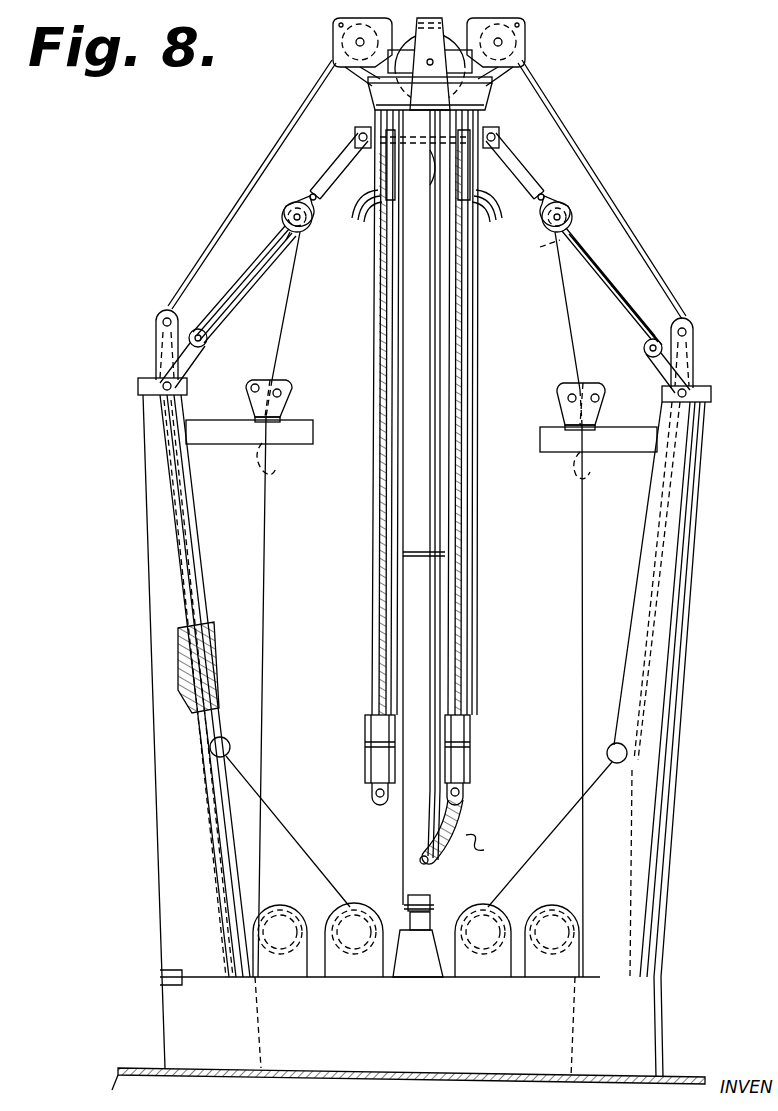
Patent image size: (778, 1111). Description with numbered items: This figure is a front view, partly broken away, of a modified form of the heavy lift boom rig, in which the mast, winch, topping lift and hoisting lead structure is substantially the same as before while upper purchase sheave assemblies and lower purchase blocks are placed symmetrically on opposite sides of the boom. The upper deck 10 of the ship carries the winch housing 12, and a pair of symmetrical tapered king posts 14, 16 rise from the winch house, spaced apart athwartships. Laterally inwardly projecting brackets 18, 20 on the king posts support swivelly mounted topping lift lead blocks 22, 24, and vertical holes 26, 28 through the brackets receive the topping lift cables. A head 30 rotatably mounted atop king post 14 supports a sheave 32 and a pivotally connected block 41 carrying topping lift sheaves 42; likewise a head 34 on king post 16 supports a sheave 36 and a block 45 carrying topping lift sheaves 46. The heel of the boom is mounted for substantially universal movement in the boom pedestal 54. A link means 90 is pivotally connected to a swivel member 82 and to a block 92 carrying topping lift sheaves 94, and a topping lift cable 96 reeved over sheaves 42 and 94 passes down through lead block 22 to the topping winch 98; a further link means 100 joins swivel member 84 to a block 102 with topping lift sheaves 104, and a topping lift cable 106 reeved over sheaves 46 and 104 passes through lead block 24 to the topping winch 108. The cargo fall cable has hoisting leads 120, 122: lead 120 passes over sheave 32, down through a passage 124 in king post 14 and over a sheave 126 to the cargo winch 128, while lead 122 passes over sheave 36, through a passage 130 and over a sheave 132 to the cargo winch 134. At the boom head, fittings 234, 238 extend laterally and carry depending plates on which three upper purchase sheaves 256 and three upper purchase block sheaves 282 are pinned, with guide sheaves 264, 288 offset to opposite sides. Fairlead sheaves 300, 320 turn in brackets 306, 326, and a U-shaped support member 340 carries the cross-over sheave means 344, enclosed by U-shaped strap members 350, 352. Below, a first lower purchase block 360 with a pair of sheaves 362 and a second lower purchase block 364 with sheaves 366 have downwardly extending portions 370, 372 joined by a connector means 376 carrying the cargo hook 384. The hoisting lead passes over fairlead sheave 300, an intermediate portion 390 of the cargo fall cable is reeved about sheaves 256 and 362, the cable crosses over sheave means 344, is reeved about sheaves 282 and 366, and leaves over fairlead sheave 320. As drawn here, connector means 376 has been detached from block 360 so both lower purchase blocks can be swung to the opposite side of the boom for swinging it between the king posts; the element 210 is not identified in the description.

The upper deck of a ship 10 is at (134, 1070).
The winch housing 12 is at (424, 1040).
The king post 14 is at (165, 905).
The king post 16 is at (676, 824).
The bracket 18 is at (222, 440).
The bracket 20 is at (612, 446).
The topping lift lead block 22 is at (290, 380).
The topping lift lead block 24 is at (562, 386).
The vertical hole 26 is at (278, 455).
The vertical hole 28 is at (566, 460).
The head 30 is at (152, 360).
The sheave 32 is at (158, 306).
The head 34 is at (700, 348).
The sheave 36 is at (696, 320).
The block 41 is at (192, 350).
The topping lift sheaves 42 is at (222, 330).
The block 45 is at (660, 366).
The topping lift sheaves 46 is at (632, 344).
The boom pedestal 54 is at (428, 970).
The swivel member 82 is at (352, 136).
The swivel member 84 is at (500, 134).
The link means 90 is at (328, 186).
The block 92 is at (288, 212).
The topping lift sheaves 94 is at (278, 258).
The topping lift cable 96 is at (284, 330).
The topping winch 98 is at (286, 968).
The link means 100 is at (522, 172).
The block 102 is at (570, 196).
The topping lift sheaves 104 is at (530, 245).
The topping lift cable 106 is at (568, 318).
The topping winch 108 is at (548, 968).
The hoisting lead 120 is at (225, 233).
The hoisting lead 122 is at (630, 218).
The passage 124 is at (205, 650).
The sheave 126 is at (235, 742).
The hoisting or cargo winch 128 is at (364, 968).
The passage 130 is at (650, 665).
The sheave 132 is at (608, 752).
The hoisting or cargo winch 134 is at (486, 968).
The central rod 210 is at (402, 838).
The fitting 234 is at (370, 108).
The fitting 238 is at (486, 94).
The upper purchase sheaves 256 is at (356, 211).
The guide sheave 264 is at (428, 168).
The upper purchase block sheaves 282 is at (497, 214).
The guide sheave 288 is at (456, 124).
The fairlead sheave 300 is at (345, 46).
The bracket 306 is at (326, 26).
The fairlead sheave 320 is at (520, 48).
The bracket 326 is at (536, 26).
The support member 340 is at (430, 64).
The cross-over sheave means 344 is at (356, 78).
The U-shaped strap member 350 is at (372, 88).
The U-shaped strap member 352 is at (494, 86).
The first lower purchase block 360 is at (366, 722).
The sheaves 362 is at (370, 752).
The second lower purchase block 364 is at (472, 720).
The sheaves 366 is at (470, 756).
The portion 370 is at (372, 795).
The portion 372 is at (466, 797).
The connector means 376 is at (450, 860).
The cargo hook 384 is at (482, 838).
The intermediate portion of the cargo fall cable 390 is at (368, 491).